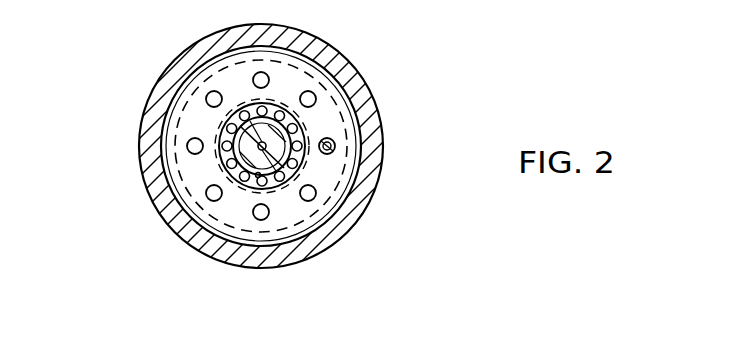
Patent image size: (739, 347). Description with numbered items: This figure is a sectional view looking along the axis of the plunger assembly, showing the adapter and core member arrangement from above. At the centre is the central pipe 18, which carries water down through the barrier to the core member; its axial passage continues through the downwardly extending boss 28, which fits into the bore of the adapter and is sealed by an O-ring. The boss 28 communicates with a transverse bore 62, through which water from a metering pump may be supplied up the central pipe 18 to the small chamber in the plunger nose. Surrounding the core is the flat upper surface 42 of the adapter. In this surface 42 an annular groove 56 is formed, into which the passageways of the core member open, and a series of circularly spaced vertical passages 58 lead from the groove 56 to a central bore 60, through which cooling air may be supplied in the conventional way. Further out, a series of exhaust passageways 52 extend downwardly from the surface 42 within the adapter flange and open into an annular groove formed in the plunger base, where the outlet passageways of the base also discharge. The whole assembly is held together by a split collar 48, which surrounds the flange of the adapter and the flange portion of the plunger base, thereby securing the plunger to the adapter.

The central pipe 18 is at (252, 152).
The boss 28 is at (258, 175).
The flat upper surface 42 is at (207, 66).
The split collar 48 is at (347, 220).
The exhaust passageways 52 is at (268, 76).
The annular groove 56 is at (302, 164).
The vertical passages 58 is at (224, 134).
The central bore 60 is at (190, 192).
The transverse bore 62 is at (330, 141).